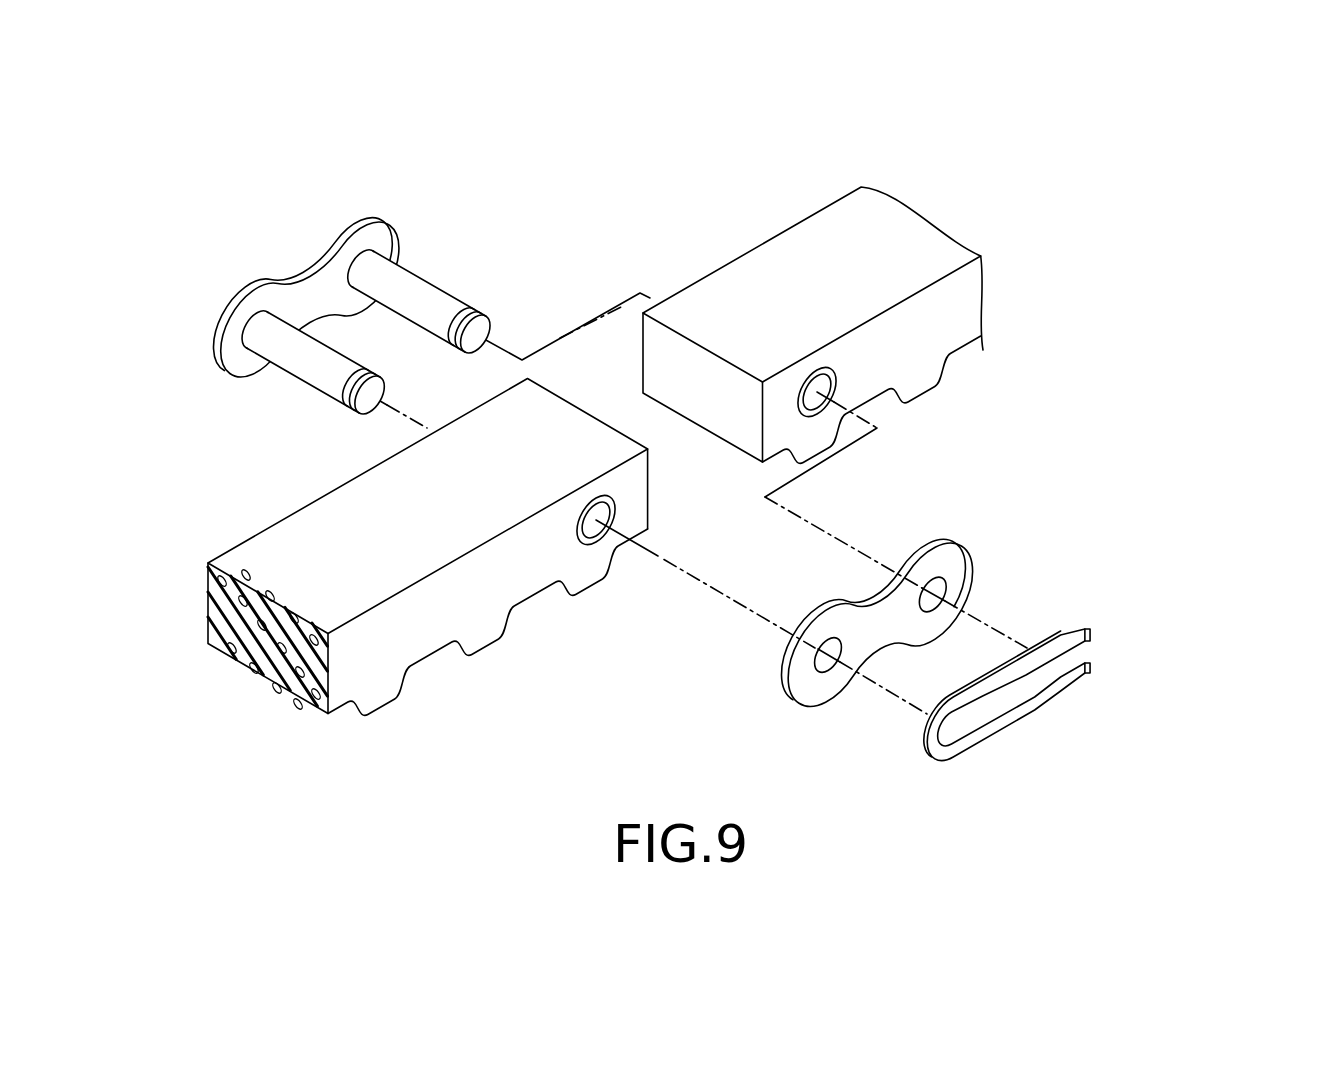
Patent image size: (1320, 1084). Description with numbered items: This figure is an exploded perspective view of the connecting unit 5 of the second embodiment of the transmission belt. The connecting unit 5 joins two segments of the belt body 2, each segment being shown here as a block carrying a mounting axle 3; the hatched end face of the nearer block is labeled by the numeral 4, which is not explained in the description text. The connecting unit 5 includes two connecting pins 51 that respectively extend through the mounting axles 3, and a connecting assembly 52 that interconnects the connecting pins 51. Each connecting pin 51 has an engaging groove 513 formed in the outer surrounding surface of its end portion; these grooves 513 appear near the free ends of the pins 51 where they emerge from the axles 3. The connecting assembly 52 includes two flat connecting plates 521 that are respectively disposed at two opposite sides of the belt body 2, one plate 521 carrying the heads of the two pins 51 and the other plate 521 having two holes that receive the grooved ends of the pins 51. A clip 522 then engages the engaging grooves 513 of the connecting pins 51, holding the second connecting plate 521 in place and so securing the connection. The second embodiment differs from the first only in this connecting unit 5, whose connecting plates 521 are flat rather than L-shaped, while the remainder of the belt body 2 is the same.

The belt body 2 is at (723, 228).
The mounting axle 3 is at (590, 543).
The chain body (hatched section) 4 is at (229, 668).
The connecting unit 5 is at (631, 448).
The connecting pin 51 is at (423, 290).
The engaging groove 513 is at (462, 312).
The connecting assembly 52 is at (1072, 700).
The connecting plate 521 is at (392, 235).
The clip 522 is at (1056, 700).